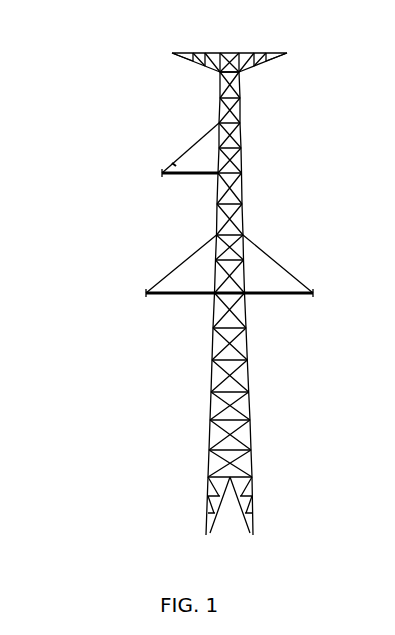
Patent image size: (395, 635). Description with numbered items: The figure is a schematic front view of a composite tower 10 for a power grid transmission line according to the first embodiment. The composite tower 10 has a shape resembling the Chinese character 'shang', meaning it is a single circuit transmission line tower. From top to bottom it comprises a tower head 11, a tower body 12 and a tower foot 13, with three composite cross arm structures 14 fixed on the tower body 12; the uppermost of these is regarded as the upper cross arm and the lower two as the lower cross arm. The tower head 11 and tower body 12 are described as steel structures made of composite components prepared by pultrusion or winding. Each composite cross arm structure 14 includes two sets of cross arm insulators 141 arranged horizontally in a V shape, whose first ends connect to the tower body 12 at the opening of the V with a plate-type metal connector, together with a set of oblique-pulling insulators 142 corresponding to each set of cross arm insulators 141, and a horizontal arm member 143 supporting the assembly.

The composite tower 10 is at (95, 66).
The tower head 11 is at (254, 63).
The tower body 12 is at (243, 196).
The tower legs 13 is at (252, 497).
The composite cross arm structure 14 is at (195, 225).
The cross arm insulators 141 is at (175, 163).
The oblique-pulling insulators 142 is at (188, 150).
The horizontal arm 143 is at (162, 173).